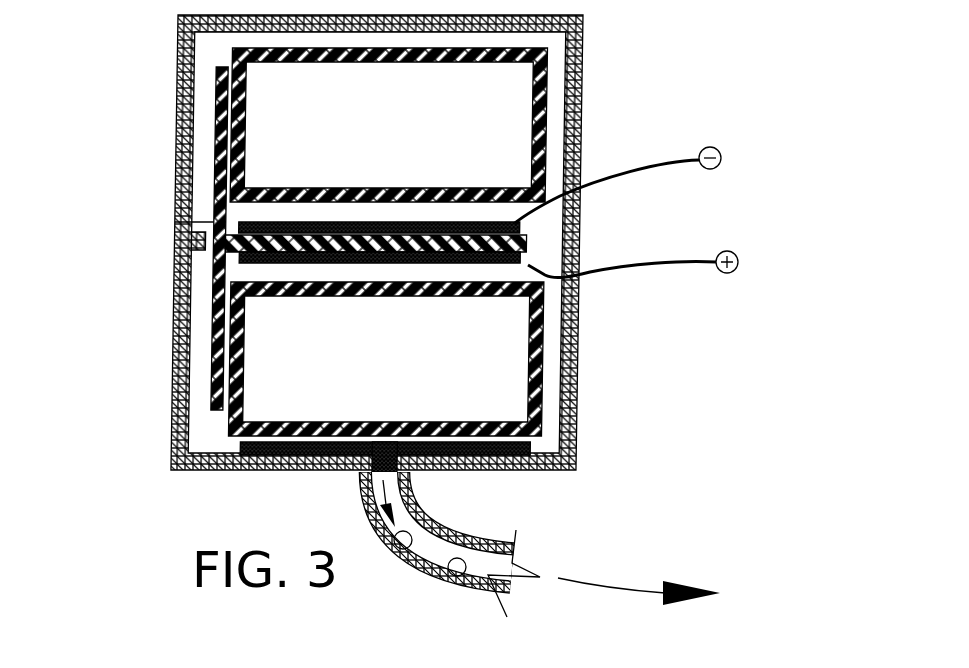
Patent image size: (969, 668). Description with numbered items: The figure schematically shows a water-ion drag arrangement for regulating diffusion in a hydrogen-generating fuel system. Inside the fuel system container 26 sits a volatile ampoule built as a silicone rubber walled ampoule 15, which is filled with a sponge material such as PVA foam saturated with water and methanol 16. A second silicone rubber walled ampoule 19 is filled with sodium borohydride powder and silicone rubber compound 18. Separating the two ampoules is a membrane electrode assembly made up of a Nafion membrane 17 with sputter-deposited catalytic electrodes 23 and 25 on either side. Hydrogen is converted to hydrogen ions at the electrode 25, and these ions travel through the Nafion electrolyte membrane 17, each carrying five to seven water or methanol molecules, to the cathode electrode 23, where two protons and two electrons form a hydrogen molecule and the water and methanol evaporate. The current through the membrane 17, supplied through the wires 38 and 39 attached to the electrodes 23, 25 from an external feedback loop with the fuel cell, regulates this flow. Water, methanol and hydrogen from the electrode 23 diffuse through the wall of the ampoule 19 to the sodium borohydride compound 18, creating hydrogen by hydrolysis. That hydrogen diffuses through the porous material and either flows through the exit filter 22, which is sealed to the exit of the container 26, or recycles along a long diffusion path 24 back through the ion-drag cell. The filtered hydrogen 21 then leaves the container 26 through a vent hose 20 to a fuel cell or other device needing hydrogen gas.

The silicone rubber walled ampoule 15 is at (548, 83).
The water and methanol 16 is at (510, 163).
The Nafion membrane 17 is at (535, 222).
The sodium borohydride powder and silicone rubber compound 18 is at (482, 353).
The silicone rubber walled ampoule 19 is at (545, 413).
The vent hose 20 is at (513, 566).
The filtered hydrogen 21 is at (790, 577).
The exit filter 22 is at (237, 448).
The catalytic electrode 23 is at (226, 312).
The long diffusion path 24 is at (212, 248).
The catalytic electrode 25 is at (178, 222).
The fuel system container 26 is at (177, 98).
The wire 38 is at (713, 146).
The wire 39 is at (738, 258).